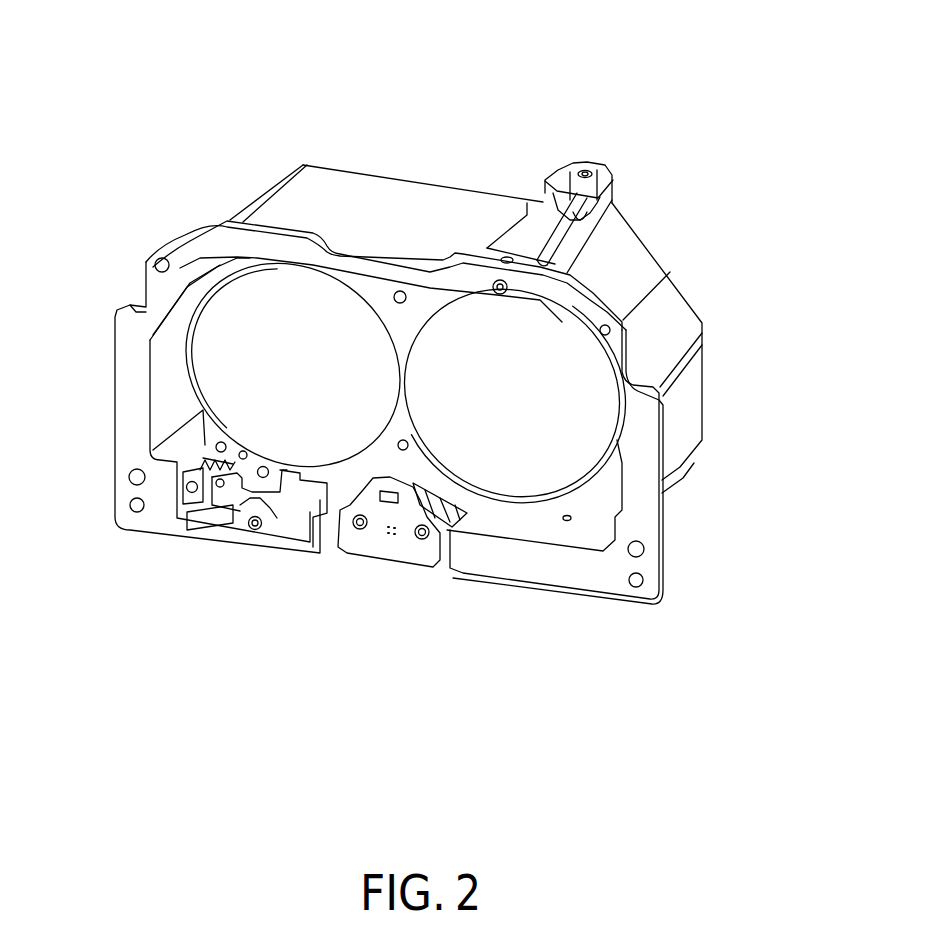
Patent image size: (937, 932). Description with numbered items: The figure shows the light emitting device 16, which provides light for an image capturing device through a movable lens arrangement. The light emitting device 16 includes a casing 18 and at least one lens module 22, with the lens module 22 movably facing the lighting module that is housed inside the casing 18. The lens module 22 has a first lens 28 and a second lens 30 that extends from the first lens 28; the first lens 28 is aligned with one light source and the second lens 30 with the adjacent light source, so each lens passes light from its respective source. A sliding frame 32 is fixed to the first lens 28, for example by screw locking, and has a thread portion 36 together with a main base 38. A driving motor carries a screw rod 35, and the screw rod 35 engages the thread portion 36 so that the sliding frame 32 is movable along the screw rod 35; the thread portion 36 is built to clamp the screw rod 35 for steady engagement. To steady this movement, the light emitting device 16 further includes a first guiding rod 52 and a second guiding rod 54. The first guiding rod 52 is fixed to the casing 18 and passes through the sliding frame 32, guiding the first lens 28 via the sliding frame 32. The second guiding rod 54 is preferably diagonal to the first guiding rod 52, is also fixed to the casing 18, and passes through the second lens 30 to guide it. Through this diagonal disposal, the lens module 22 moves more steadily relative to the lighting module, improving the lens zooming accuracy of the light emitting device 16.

The light emitting device 16 is at (703, 90).
The casing 18 is at (393, 191).
The lens module 22 is at (488, 633).
The first lens 28 is at (312, 437).
The second lens 30 is at (510, 470).
The sliding frame 32 is at (232, 505).
The screw rod 35 is at (185, 490).
The thread portion 36 is at (200, 468).
The main base 38 is at (228, 484).
The first guiding rod 52 is at (256, 530).
The second guiding rod 54 is at (550, 232).